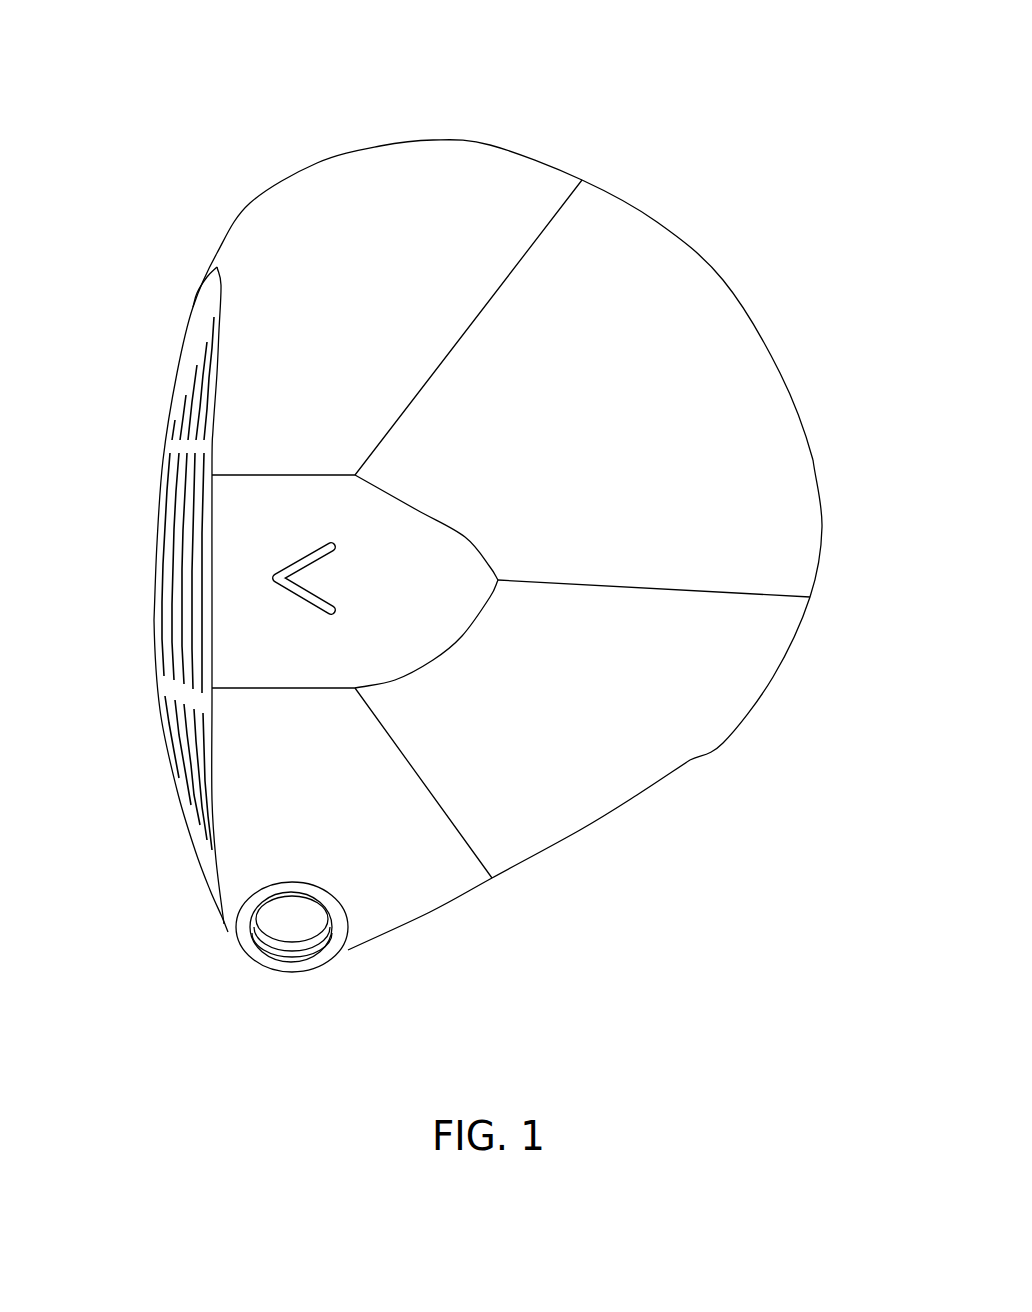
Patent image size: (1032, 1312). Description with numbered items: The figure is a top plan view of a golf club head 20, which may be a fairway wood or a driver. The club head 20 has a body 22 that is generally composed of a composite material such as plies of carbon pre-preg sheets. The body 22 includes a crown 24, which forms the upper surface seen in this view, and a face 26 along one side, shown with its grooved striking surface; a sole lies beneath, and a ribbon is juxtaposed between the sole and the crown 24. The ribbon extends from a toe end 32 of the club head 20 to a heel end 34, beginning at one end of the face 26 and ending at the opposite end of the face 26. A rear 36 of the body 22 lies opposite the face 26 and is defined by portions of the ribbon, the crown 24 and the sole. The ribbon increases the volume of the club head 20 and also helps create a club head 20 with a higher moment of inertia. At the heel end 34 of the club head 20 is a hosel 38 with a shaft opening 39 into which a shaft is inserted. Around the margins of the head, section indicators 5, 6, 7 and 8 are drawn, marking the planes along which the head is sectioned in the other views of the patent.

The golf club head 20 is at (635, 125).
The body 22 is at (723, 388).
The crown 24 is at (607, 267).
The face 26 is at (182, 405).
The toe end 32 is at (452, 117).
The heel end 34 is at (447, 933).
The rear 36 is at (832, 438).
The hosel 38 is at (308, 965).
The shaft opening 39 is at (282, 927).
The section line 5- 5 is at (137, 582).
The section line 6- 6 is at (168, 315).
The section line 7- 7 is at (168, 838).
The section line 8- 8 is at (292, 155).